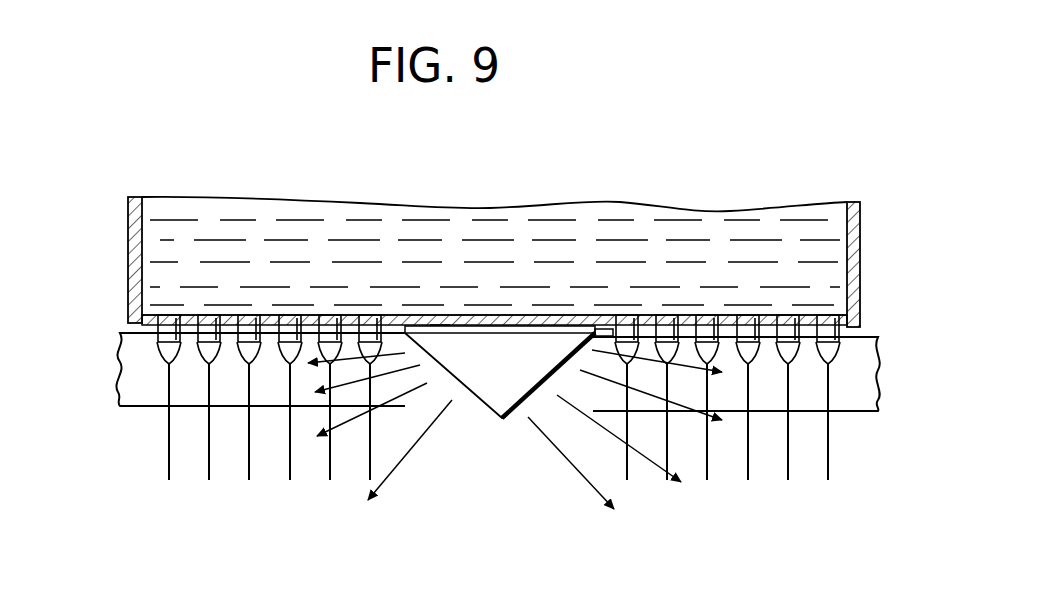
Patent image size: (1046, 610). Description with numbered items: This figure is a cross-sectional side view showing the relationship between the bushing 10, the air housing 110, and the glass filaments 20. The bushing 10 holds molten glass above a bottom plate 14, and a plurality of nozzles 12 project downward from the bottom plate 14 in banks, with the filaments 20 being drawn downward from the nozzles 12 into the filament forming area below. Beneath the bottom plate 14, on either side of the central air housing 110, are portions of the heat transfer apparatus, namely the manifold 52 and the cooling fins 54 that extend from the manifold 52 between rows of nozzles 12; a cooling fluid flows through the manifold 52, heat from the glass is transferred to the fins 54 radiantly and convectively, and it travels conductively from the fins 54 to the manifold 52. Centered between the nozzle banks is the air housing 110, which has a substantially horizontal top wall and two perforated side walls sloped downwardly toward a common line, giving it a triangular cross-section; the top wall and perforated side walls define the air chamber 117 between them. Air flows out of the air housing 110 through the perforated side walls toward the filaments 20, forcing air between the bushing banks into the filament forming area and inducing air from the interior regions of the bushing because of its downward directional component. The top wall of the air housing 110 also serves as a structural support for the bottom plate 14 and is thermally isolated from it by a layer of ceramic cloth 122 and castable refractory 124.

The bushing 10 is at (876, 266).
The nozzles 12 is at (251, 332).
The bottom plate 14 is at (548, 314).
The filaments 20 is at (211, 463).
The manifold 52 is at (400, 462).
The cooling fins 54 is at (128, 388).
The air housing 110 is at (508, 418).
The air chamber 117 is at (512, 345).
The ceramic cloth 122 is at (440, 318).
The castable refractory 124 is at (470, 331).